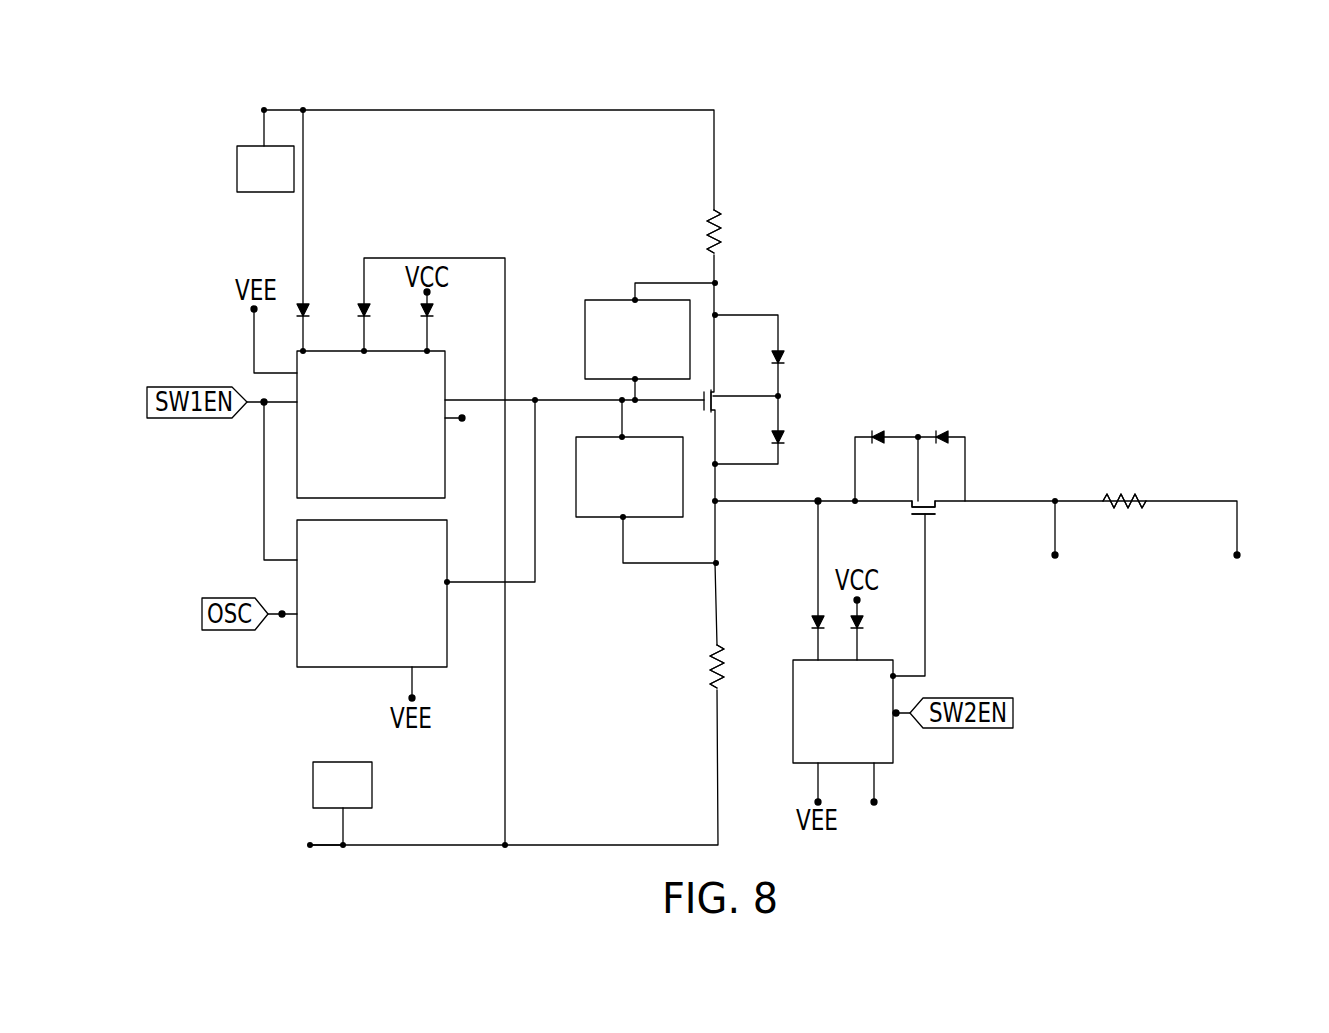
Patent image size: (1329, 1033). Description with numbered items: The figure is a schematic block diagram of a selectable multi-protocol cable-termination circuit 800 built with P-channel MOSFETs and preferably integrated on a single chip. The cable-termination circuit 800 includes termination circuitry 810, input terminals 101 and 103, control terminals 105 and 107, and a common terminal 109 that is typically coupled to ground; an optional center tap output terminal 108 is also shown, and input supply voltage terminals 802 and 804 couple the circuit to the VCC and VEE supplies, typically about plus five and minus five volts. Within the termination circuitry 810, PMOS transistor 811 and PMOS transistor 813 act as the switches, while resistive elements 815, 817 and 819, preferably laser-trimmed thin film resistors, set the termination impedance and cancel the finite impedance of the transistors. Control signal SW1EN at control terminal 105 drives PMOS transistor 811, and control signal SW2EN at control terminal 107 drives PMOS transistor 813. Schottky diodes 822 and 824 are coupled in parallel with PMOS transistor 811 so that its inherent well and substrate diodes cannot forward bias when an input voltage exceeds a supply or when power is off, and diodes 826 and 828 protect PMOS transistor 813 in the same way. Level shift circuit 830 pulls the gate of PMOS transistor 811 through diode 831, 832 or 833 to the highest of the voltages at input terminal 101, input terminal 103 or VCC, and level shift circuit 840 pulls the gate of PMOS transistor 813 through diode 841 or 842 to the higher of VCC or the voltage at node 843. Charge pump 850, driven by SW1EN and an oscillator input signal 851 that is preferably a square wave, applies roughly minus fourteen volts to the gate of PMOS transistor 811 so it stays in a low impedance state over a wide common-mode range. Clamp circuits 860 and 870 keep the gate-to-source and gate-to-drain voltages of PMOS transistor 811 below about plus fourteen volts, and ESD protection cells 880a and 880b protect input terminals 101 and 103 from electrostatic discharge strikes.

The cable-termination circuit 800 is at (1050, 152).
The termination circuitry 810 is at (843, 247).
The input terminal 101 is at (264, 110).
The input terminal 103 is at (310, 845).
The control terminal 105 is at (264, 405).
The control terminal 107 is at (898, 716).
The center tap output terminal 108 is at (1055, 558).
The common terminal 109 is at (462, 421).
The input supply voltage terminal 802 is at (427, 292).
The input supply voltage terminal 804 is at (254, 309).
The PMOS transistor 811 is at (700, 406).
The PMOS transistor 813 is at (928, 519).
The resistive element 815 is at (722, 236).
The resistive element 817 is at (711, 667).
The resistive element 819 is at (1124, 506).
The diode 822 is at (782, 353).
The diode 824 is at (782, 433).
The diode 826 is at (880, 432).
The diode 828 is at (946, 433).
The level shift circuit 830 is at (445, 488).
The diode 831 is at (309, 317).
The diode 832 is at (367, 314).
The diode 833 is at (430, 313).
The level shift circuit 840 is at (793, 680).
The diode 841 is at (860, 627).
The diode 842 is at (813, 625).
The node 843 is at (818, 504).
The charge pump 850 is at (297, 660).
The oscillator input OSC 851 is at (282, 614).
The clamp circuit 860 is at (585, 323).
The clamp circuit 870 is at (590, 518).
The ESD protection cell 880a is at (237, 172).
The ESD protection cell 880b is at (313, 787).